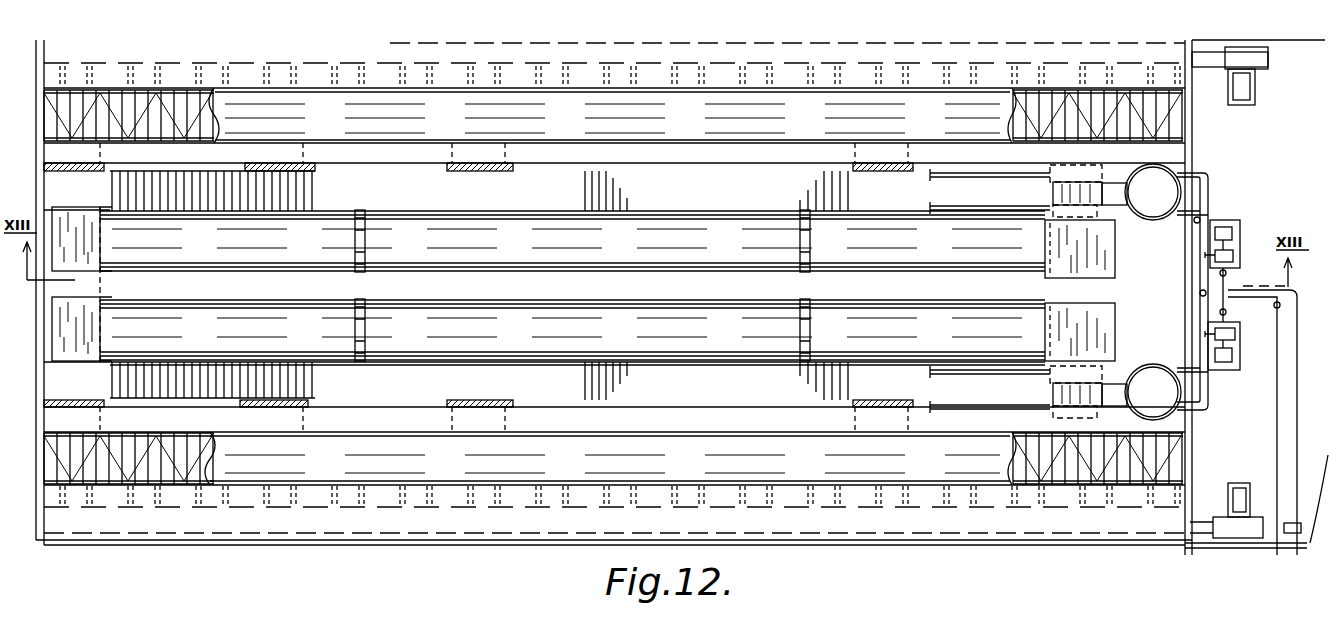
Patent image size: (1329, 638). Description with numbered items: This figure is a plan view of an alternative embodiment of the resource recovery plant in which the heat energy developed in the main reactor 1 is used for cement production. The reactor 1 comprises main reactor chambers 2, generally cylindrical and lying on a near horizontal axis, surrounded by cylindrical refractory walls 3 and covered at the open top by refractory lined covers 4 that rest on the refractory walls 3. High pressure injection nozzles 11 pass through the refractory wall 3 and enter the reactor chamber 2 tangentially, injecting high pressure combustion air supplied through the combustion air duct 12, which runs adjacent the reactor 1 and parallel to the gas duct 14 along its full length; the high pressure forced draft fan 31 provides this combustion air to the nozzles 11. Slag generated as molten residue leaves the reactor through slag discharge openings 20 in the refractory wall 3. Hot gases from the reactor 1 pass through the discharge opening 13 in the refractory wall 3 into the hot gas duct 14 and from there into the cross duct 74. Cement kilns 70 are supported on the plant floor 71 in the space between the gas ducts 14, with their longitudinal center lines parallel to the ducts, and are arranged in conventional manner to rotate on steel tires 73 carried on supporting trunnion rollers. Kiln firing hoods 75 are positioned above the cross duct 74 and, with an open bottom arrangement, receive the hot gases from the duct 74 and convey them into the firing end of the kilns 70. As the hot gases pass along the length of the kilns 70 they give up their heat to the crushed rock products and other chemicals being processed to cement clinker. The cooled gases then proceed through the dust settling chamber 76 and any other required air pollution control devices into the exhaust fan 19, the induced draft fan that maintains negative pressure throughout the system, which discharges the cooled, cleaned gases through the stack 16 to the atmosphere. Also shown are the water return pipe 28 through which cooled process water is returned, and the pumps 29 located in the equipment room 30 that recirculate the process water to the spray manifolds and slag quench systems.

The reactor 1 is at (975, 88).
The main reactor chamber 2 is at (632, 127).
The refractory wall 3 is at (316, 92).
The refractory lined cover 4 is at (208, 127).
The high pressure injection nozzle 11 is at (276, 64).
The combustion air duct 12 is at (612, 118).
The discharge opening 13 is at (100, 150).
The gas duct 14 is at (746, 195).
The exhaust stack 16 is at (1163, 220).
The induced draft fan 19 is at (1050, 190).
The slag discharge opening 20 is at (217, 153).
The water return pipe 28 is at (1277, 552).
The pump 29 is at (1242, 232).
The equipment room 30 is at (1310, 176).
The high pressure forced draft fan 31 is at (1262, 72).
The cement kiln 70 is at (487, 306).
The plant floor 71 is at (672, 300).
The steel tire 73 is at (358, 303).
The cross duct 74 is at (74, 207).
The kiln firing hood 75 is at (108, 306).
The dust settling chamber 76 is at (1040, 303).